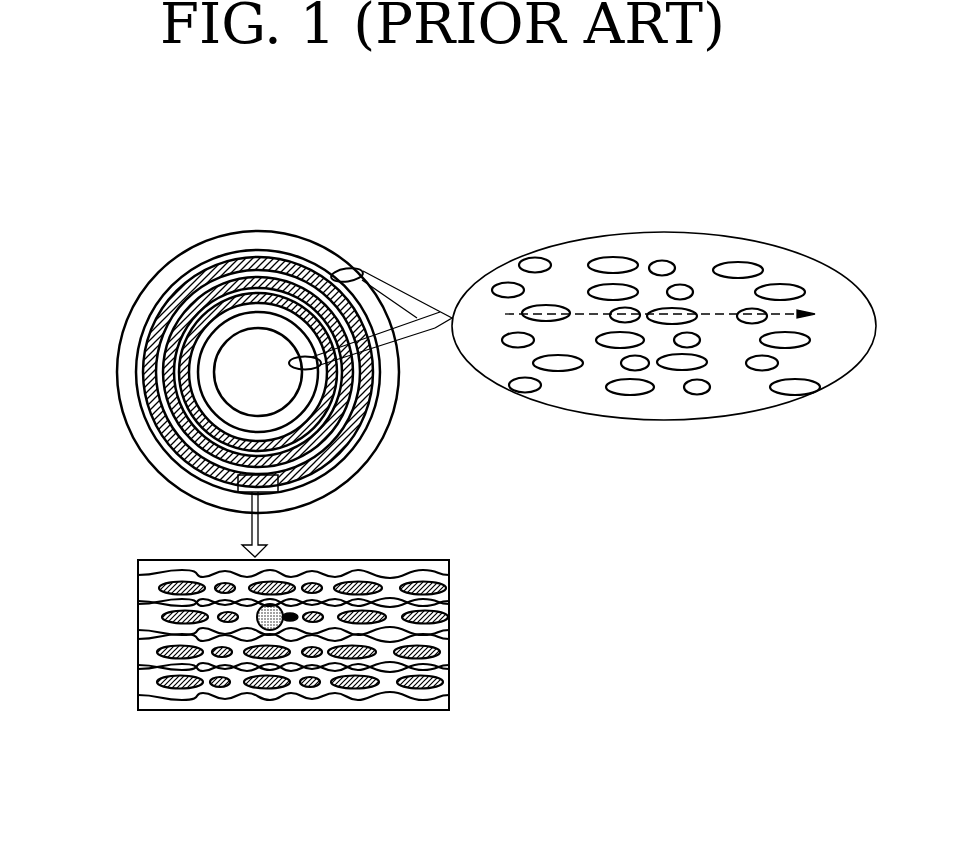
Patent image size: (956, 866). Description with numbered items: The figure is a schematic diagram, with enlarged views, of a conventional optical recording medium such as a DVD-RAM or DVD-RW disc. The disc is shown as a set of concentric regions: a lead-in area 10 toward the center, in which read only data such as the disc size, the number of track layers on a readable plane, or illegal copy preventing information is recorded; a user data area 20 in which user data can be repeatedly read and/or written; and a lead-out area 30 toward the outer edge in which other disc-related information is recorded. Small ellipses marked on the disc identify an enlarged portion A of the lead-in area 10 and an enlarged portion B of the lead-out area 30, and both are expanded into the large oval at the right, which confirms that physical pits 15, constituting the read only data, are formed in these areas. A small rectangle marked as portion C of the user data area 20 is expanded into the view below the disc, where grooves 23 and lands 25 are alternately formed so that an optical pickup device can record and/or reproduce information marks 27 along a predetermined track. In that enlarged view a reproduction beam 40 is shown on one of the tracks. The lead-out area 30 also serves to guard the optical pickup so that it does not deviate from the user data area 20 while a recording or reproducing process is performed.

The lead-in area 10 is at (262, 317).
The physical pits 15 is at (695, 390).
The user data area 20 is at (132, 361).
The grooves 23 is at (146, 589).
The lands 25 is at (146, 621).
The information marks 27 is at (412, 688).
The lead-out area 30 is at (218, 245).
The reproduction beam 40 is at (278, 604).
The enlarged portion of the lead-in area A is at (289, 363).
The enlarged portion of the lead-out area B is at (348, 268).
The portion of the user data area C is at (238, 492).